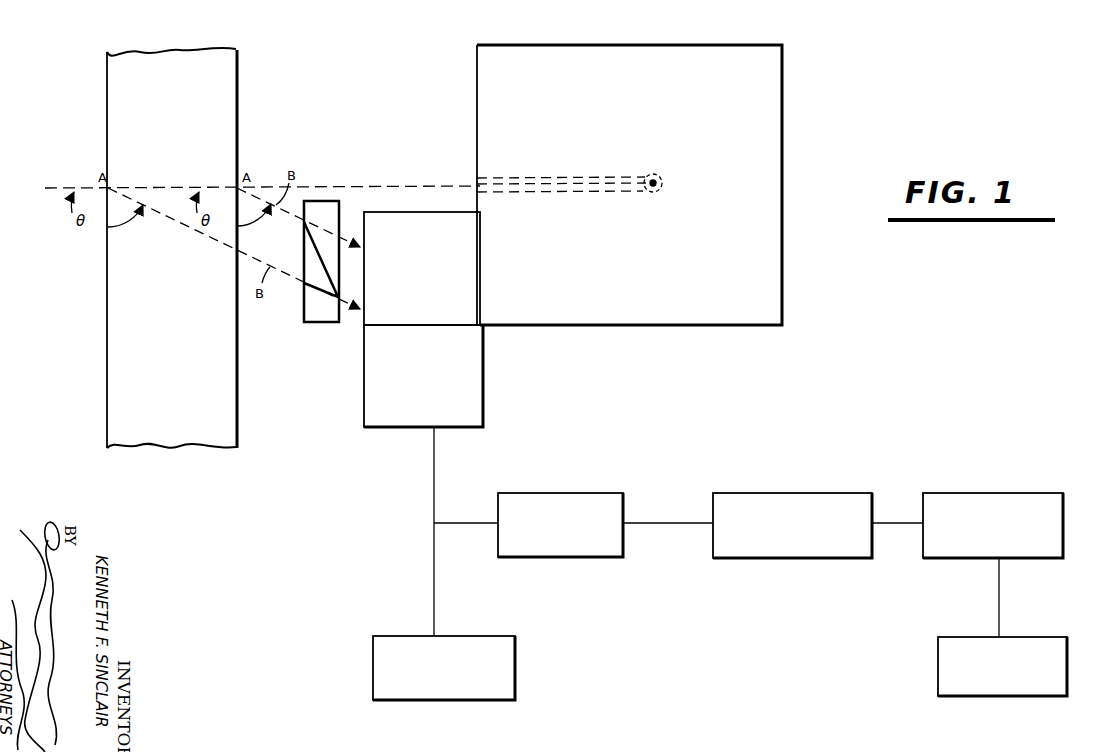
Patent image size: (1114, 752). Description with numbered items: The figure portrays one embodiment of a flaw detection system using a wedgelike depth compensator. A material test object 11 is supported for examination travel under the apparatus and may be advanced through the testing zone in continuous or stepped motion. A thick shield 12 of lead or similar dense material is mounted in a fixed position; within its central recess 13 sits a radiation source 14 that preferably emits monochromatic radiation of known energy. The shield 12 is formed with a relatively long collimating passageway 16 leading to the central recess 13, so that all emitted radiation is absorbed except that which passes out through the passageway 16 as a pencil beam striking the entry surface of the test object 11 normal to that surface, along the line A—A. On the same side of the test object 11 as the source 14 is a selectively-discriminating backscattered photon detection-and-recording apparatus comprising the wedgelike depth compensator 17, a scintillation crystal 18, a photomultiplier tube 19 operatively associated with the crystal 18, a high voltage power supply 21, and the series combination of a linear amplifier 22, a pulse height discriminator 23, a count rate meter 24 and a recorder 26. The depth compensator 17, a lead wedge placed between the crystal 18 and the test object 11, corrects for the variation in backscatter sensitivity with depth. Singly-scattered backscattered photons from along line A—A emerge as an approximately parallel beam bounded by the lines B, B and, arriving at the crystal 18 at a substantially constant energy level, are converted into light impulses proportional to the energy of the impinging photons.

The material test object 11 is at (237, 128).
The thick shield 12 is at (782, 114).
The central recess 13 is at (648, 192).
The radiation source 14 is at (660, 177).
The collimating passageway 16 is at (560, 194).
The wedgelike depth compensator 17 is at (345, 228).
The scintillation crystal 18 is at (412, 212).
The photomultiplier tube 19 is at (483, 388).
The high voltage power supply 21 is at (504, 622).
The linear amplifier 22 is at (602, 493).
The pulse height discriminator 23 is at (833, 476).
The count rate meter 24 is at (1028, 476).
The recorder 26 is at (1054, 628).